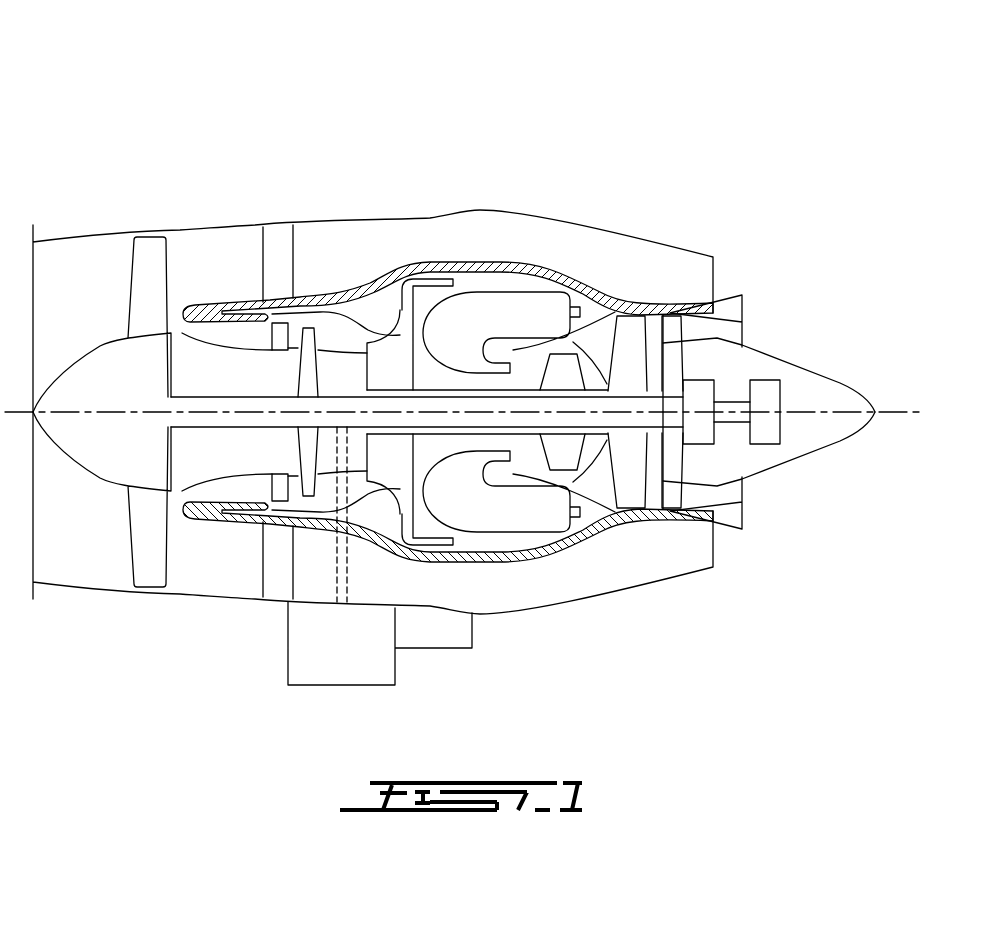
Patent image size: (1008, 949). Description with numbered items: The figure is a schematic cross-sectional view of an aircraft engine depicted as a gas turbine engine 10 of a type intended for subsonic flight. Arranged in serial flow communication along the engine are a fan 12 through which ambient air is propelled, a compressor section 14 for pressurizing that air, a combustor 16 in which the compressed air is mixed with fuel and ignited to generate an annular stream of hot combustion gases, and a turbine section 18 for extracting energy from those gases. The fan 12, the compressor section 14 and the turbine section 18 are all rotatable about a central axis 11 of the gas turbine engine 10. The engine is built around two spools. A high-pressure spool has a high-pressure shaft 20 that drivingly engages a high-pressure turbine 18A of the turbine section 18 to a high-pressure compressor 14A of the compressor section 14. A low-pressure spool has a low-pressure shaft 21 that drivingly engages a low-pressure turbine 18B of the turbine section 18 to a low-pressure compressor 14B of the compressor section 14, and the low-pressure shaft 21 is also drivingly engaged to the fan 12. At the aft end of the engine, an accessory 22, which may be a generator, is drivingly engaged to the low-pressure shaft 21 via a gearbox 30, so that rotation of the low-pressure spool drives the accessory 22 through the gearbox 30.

The gas turbine engine 10 is at (637, 123).
The central axis 11 is at (903, 413).
The fan 12 is at (145, 527).
The compressor section 14 is at (337, 337).
The high-pressure compressor 14A is at (390, 472).
The low-pressure compressor 14B is at (310, 452).
The combustor 16 is at (497, 307).
The turbine section 18 is at (605, 407).
The high-pressure turbine 18A is at (565, 367).
The low-pressure turbine 18B is at (613, 313).
The high-pressure shaft 20 is at (440, 433).
The low-pressure shaft 21 is at (220, 397).
The accessory 22 is at (765, 378).
The gearbox 30 is at (700, 378).